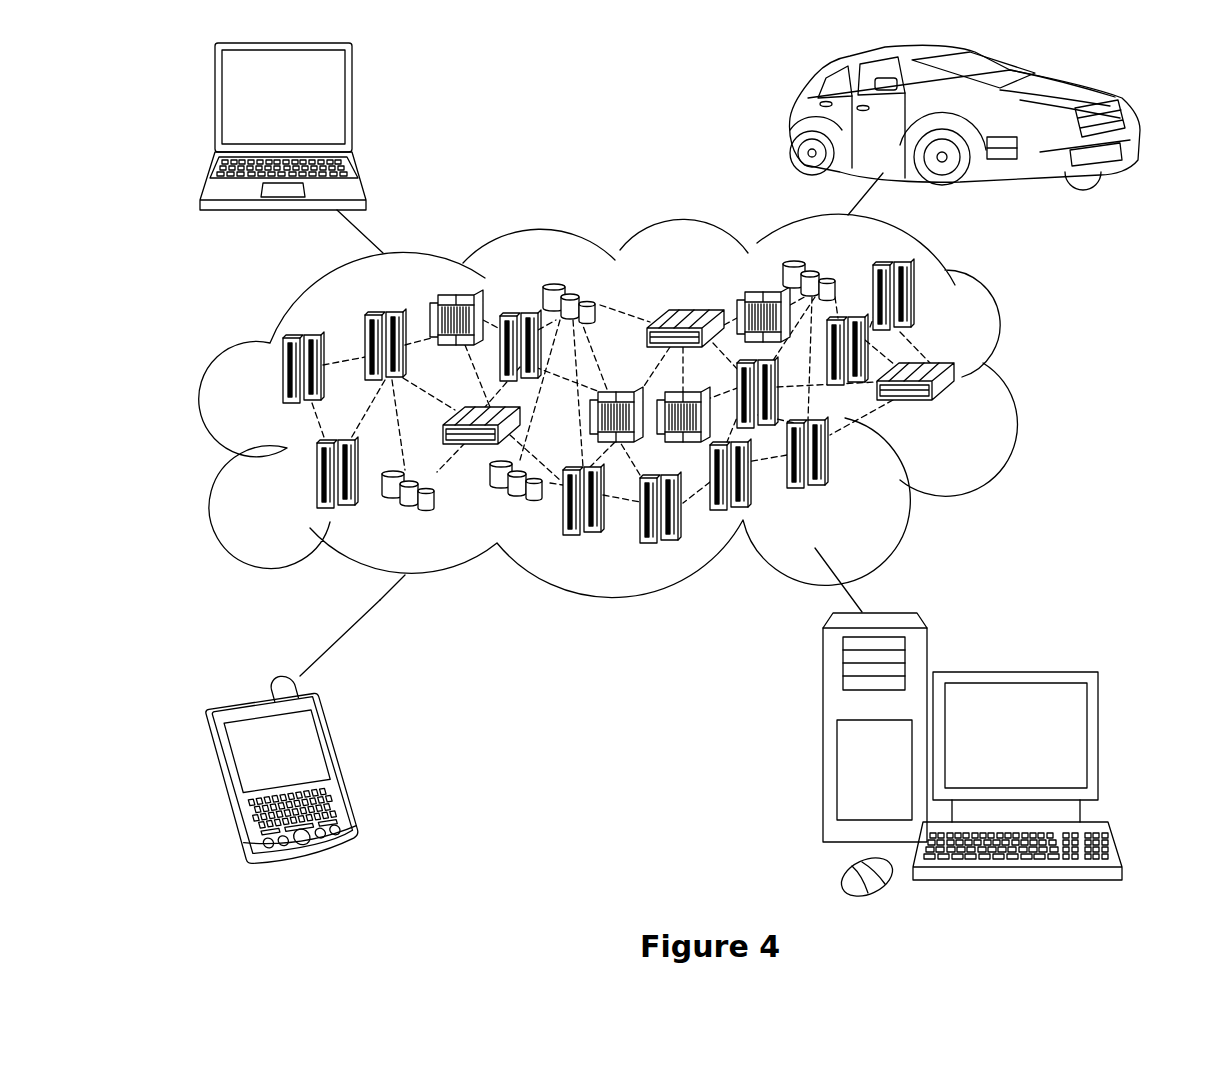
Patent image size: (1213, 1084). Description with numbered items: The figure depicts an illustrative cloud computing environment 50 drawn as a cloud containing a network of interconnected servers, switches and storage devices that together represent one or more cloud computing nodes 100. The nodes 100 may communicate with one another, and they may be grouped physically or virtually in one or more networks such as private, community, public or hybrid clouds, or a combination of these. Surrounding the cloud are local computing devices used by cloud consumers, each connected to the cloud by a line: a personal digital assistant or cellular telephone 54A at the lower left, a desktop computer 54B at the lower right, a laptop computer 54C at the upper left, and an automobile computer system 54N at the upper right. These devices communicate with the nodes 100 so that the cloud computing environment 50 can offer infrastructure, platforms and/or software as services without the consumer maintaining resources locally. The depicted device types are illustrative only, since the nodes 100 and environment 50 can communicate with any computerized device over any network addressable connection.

The cloud computing environment 50 is at (1013, 378).
The cloud computing nodes 100 is at (953, 410).
The personal digital assistant or cellular telephone 54A is at (340, 765).
The desktop computer 54B is at (1012, 672).
The laptop computer 54C is at (352, 105).
The automobile computer system 54N is at (790, 120).